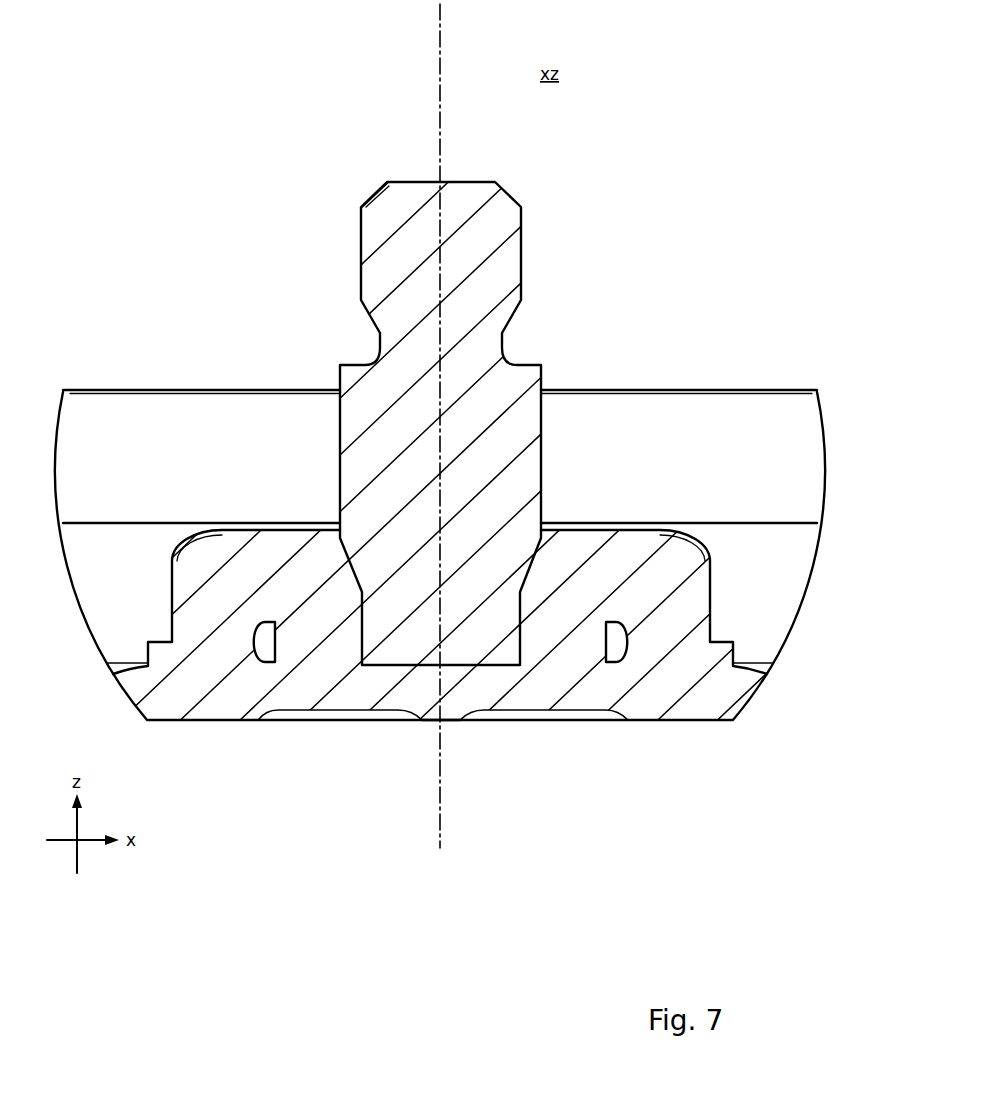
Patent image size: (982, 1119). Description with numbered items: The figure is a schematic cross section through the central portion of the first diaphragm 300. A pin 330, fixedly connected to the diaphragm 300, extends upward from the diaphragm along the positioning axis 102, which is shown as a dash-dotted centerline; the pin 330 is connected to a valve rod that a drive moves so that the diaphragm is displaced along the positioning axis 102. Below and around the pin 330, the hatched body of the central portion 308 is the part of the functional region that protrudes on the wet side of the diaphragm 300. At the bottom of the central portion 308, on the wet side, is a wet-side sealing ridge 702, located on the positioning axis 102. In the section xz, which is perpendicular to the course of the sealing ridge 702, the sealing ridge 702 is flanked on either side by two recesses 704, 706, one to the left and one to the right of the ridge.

The positioning axis 102 is at (437, 64).
The first diaphragm 300 is at (670, 110).
The central portion 308 is at (667, 280).
The pin 330 is at (498, 210).
The wet-side sealing ridge 702 is at (435, 737).
The recess 704 is at (331, 735).
The recess 706 is at (558, 735).